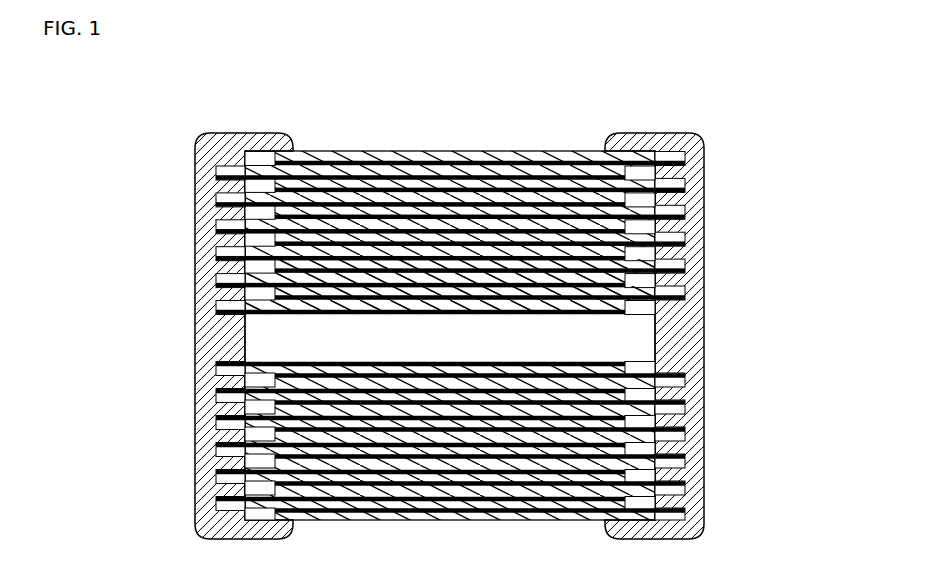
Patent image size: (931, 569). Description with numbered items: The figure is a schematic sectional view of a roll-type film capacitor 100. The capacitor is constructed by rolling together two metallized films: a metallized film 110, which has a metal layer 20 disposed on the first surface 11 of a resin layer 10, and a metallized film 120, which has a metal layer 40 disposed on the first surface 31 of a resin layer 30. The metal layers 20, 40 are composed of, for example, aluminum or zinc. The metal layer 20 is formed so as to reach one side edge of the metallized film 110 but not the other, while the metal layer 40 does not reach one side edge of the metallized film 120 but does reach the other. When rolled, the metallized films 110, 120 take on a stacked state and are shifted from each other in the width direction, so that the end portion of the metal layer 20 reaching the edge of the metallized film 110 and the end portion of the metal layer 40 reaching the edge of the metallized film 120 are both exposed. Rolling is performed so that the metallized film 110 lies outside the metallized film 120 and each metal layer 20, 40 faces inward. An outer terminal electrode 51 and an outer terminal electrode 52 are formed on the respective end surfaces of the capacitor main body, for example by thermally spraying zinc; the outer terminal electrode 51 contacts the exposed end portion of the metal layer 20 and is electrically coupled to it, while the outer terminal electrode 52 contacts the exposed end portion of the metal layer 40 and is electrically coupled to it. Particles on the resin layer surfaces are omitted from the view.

The film capacitor 100 is at (171, 112).
The metallized film 110 is at (780, 247).
The metallized film 120 is at (120, 257).
The resin layer 10 is at (678, 267).
The first surface 11 is at (678, 275).
The metal layer 20 is at (679, 289).
The resin layer 30 is at (224, 277).
The first surface 31 is at (224, 287).
The metal layer 40 is at (217, 305).
The outer terminal electrode 51 is at (705, 200).
The outer terminal electrode 52 is at (196, 200).